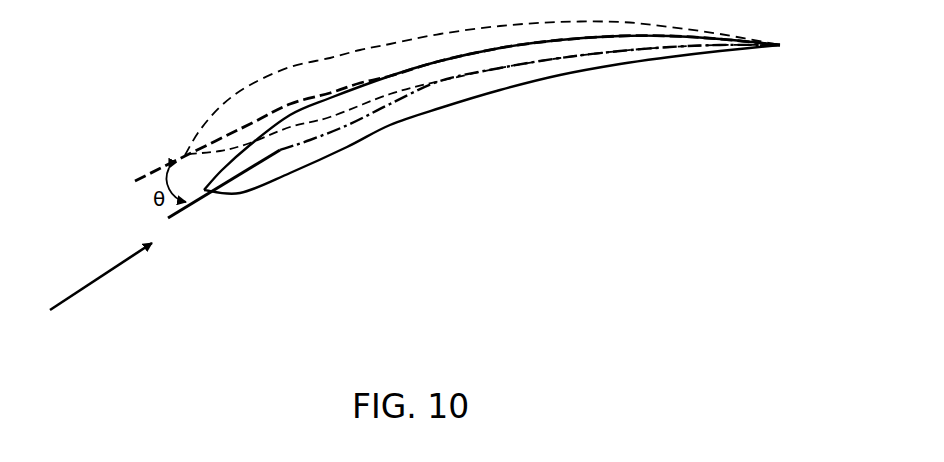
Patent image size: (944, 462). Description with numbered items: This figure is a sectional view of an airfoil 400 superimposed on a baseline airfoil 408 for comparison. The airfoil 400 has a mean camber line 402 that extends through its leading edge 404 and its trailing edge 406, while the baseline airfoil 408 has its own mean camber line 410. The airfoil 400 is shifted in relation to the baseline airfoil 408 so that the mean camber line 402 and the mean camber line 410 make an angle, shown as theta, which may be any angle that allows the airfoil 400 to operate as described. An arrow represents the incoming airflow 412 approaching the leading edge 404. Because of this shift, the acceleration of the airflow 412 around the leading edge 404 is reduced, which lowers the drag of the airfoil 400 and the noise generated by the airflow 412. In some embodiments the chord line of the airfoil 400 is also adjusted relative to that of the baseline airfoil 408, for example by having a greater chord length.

The airfoil 400 is at (343, 148).
The mean camber line 402 is at (277, 152).
The leading edge 404 is at (208, 197).
The trailing edge 406 is at (780, 45).
The baseline airfoil 408 is at (297, 72).
The mean camber line 410 is at (178, 155).
The airflow 412 is at (85, 290).